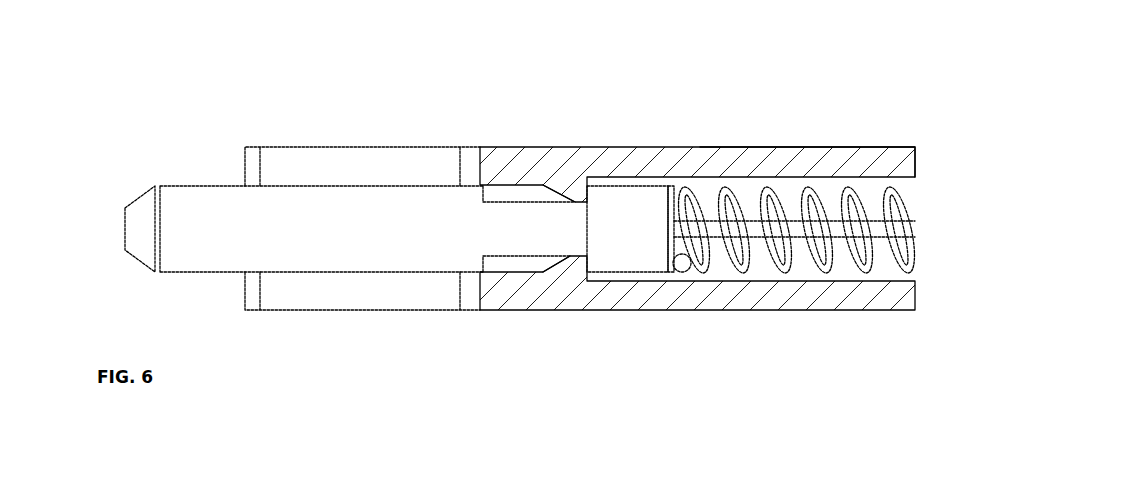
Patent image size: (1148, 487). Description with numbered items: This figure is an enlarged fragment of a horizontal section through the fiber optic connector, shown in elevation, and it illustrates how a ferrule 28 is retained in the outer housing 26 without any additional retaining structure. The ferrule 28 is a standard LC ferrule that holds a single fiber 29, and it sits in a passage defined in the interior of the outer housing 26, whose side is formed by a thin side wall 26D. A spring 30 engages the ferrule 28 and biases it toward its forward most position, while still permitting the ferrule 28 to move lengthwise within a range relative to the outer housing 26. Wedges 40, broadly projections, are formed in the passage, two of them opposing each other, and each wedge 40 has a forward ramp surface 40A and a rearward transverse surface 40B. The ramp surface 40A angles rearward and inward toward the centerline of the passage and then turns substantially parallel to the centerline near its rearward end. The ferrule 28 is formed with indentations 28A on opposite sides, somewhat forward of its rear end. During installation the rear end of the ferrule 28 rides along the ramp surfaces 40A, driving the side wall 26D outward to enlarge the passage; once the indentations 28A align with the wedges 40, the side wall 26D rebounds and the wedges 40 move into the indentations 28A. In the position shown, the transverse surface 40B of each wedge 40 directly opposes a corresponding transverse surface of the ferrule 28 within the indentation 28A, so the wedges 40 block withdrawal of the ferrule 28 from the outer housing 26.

The outer housing 26 is at (678, 150).
The side wall 26D is at (774, 147).
The ferrule 28 is at (263, 217).
The indentation 28A is at (500, 201).
The fiber 29 is at (715, 230).
The spring 30 is at (820, 246).
The wedge 40 is at (483, 258).
The ramp surface 40A is at (558, 192).
The transverse surface 40B is at (590, 273).